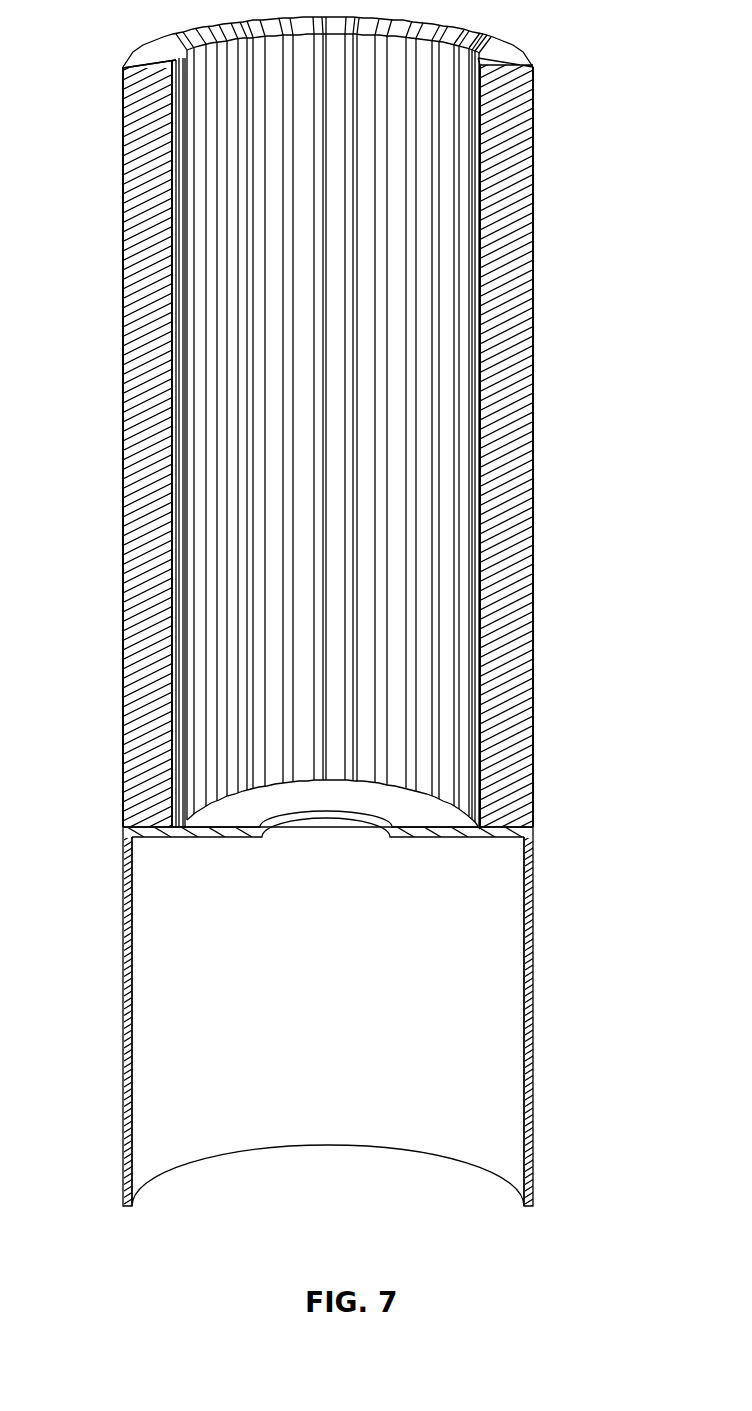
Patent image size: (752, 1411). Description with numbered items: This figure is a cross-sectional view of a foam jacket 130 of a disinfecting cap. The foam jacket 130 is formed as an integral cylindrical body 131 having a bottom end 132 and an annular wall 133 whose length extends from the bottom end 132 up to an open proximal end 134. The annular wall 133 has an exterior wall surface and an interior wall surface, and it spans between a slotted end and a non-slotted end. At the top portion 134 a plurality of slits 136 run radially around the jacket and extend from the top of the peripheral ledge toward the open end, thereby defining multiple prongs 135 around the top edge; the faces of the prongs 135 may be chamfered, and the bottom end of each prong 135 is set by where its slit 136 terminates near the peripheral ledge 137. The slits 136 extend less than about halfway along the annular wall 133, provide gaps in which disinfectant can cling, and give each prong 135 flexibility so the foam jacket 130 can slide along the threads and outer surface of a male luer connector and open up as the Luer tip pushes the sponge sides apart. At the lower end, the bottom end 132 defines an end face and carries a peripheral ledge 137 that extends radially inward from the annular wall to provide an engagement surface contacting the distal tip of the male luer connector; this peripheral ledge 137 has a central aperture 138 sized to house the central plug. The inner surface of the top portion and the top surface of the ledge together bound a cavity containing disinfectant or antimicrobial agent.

The foam jacket 130 is at (125, 1011).
The integral cylindrical body 131 is at (125, 728).
The bottom end 132 is at (535, 1011).
The annular wall 133 is at (150, 957).
The open proximal end 134 is at (133, 80).
The prongs 135 is at (510, 117).
The slits 136 is at (490, 43).
The peripheral ledge 137 is at (442, 818).
The central aperture 138 is at (365, 843).